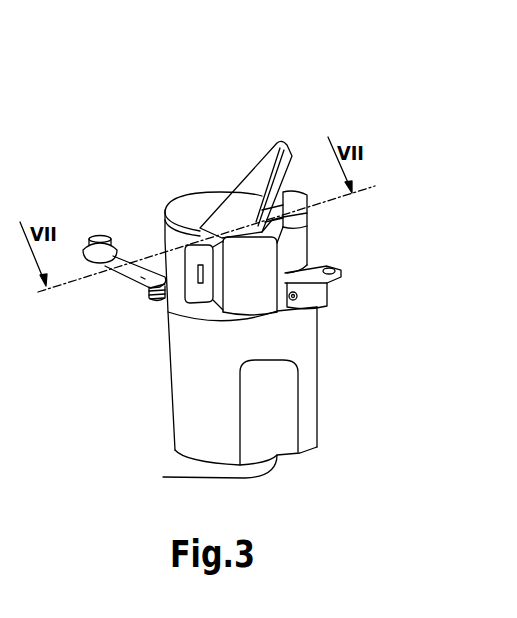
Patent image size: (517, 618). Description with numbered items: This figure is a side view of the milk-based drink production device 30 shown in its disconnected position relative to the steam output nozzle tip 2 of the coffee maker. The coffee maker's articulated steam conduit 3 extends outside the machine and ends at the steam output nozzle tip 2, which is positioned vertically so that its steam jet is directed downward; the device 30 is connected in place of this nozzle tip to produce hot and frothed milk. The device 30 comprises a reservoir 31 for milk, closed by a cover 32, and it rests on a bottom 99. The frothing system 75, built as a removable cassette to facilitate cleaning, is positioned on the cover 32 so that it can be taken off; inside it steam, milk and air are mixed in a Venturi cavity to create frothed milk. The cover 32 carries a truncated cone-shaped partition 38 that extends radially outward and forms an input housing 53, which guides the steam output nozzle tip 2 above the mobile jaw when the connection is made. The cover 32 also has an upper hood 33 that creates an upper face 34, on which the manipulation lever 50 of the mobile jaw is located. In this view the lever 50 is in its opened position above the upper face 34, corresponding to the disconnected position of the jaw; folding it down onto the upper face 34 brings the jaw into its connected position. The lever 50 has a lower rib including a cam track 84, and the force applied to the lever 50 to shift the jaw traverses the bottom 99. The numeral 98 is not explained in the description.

The milk-based drink production device 30 is at (168, 149).
The upper face 34 is at (193, 203).
The manipulation lever 50 is at (248, 170).
The cam track 84 is at (293, 173).
The upper hood 33 is at (180, 243).
The truncated cone-shaped partition 38 is at (186, 262).
The input housing 53 is at (190, 268).
The cover 32 is at (303, 253).
The frothing system 75 is at (307, 288).
The reservoir 31 is at (290, 352).
The bottom 99 is at (200, 477).
The articulated steam conduit 3 is at (120, 273).
The threaded fitting 98 is at (147, 292).
The steam output nozzle tip 2 is at (155, 300).